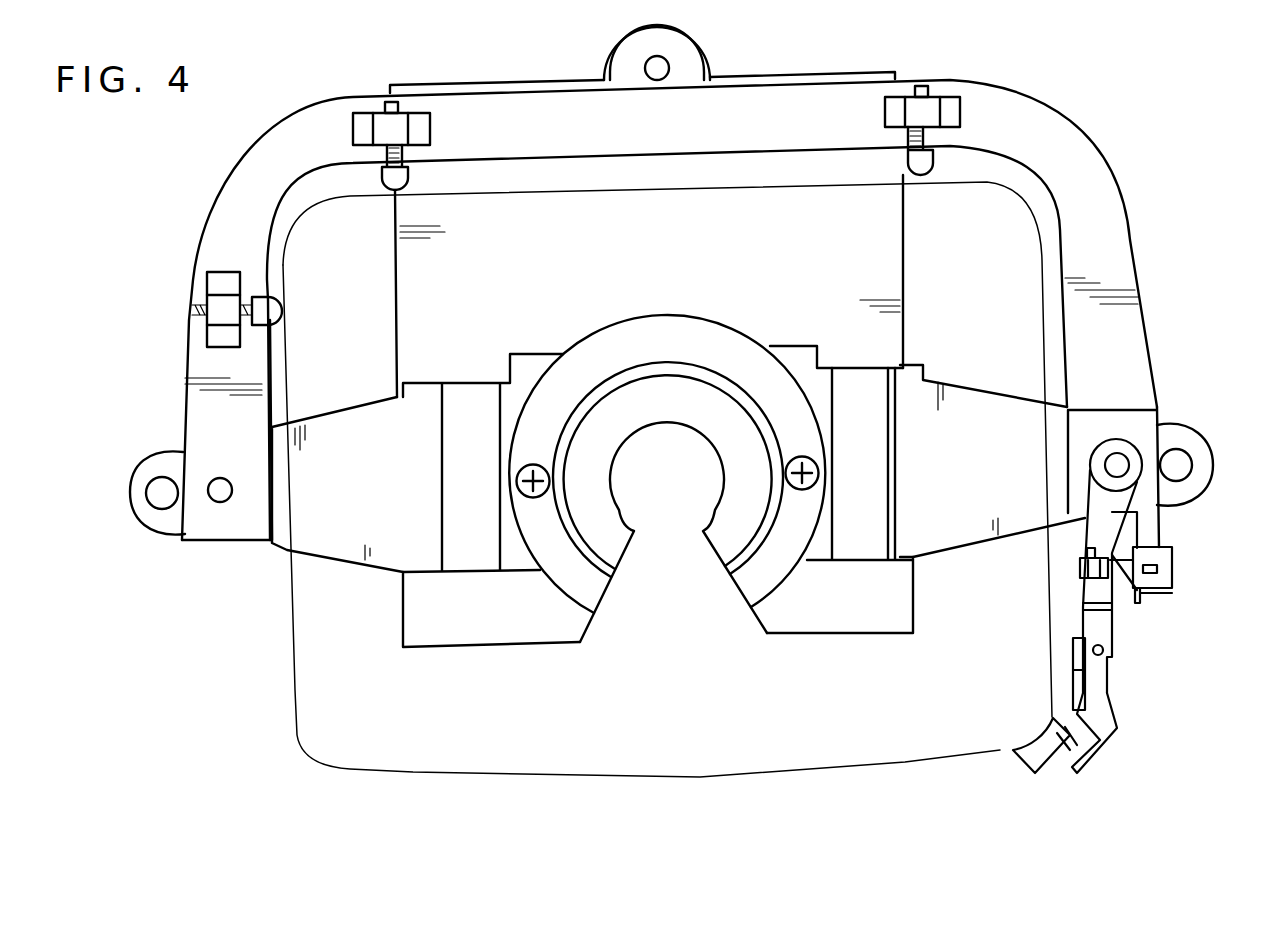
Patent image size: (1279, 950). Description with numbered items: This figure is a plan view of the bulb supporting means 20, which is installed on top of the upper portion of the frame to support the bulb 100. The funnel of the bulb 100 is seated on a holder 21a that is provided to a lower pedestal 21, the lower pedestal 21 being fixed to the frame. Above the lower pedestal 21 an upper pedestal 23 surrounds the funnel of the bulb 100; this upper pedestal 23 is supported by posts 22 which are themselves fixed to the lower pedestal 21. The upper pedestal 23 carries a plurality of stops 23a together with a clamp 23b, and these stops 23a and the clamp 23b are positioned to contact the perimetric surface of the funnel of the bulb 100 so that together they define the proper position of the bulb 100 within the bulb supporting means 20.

The bulb supporting means 20 is at (1172, 174).
The lower pedestal 21 is at (342, 530).
The holder 21a is at (603, 538).
The post 22 is at (1182, 457).
The upper pedestal 23 is at (222, 518).
The stop 23a is at (223, 302).
The clamp 23b is at (1100, 707).
The bulb 100 is at (398, 731).